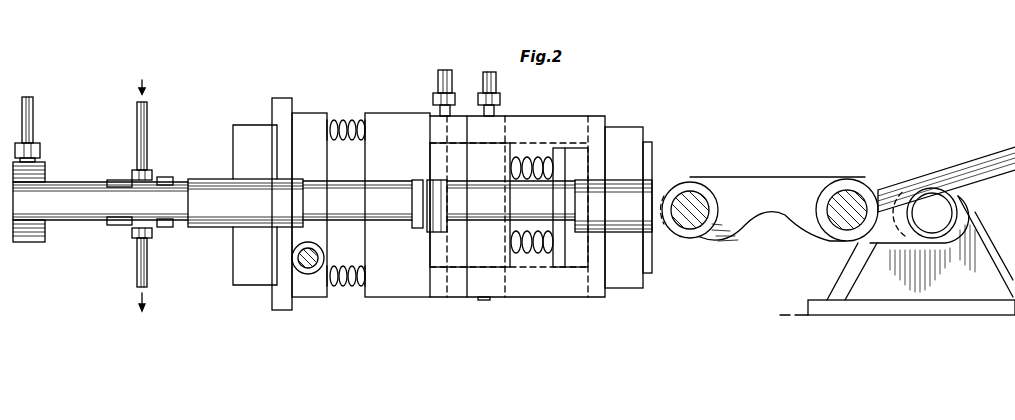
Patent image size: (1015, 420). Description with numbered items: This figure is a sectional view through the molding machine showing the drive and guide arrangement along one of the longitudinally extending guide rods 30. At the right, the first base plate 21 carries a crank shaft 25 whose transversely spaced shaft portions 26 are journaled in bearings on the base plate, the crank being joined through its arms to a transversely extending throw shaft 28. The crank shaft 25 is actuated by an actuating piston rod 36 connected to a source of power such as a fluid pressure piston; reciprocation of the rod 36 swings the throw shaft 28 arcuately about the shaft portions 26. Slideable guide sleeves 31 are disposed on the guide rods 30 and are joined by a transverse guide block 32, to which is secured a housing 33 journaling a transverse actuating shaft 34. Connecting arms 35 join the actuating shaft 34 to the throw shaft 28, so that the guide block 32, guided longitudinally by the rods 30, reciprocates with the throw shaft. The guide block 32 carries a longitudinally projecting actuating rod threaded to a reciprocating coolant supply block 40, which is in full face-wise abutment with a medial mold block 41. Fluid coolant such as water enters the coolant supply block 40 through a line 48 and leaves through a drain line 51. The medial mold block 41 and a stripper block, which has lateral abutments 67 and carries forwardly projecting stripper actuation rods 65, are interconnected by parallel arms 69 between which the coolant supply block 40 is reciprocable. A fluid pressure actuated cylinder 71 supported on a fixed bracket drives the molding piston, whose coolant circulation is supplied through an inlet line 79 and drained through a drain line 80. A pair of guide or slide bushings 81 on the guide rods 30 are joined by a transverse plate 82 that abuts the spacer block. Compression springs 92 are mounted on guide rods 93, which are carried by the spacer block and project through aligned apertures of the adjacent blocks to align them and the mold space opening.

The first base plate 21 is at (818, 300).
The crank shaft 25 is at (893, 172).
The shaft portions 26 is at (925, 207).
The throw shaft 28 is at (840, 198).
The guide rods 30 is at (98, 170).
The guide sleeves 31 is at (620, 183).
The guide block 32 is at (625, 132).
The housing 33 is at (678, 178).
The actuating shaft 34 is at (692, 196).
The connecting arms 35 is at (762, 187).
The actuating piston rod 36 is at (985, 158).
The coolant supply block 40 is at (490, 155).
The medial mold block 41 is at (437, 150).
The line 48 is at (488, 70).
The drain line 51 is at (478, 300).
The stripper actuation rods 65 is at (540, 230).
The lateral abutments 67 is at (417, 180).
The parallel arms 69 is at (527, 123).
The fluid pressure actuated cylinder 71 is at (47, 168).
The inlet line 79 is at (138, 135).
The drain line 80 is at (136, 262).
The slide bushings 81 is at (200, 183).
The transverse plate 82 is at (237, 248).
The compression springs 92 is at (357, 106).
The guide rods 93 is at (328, 135).